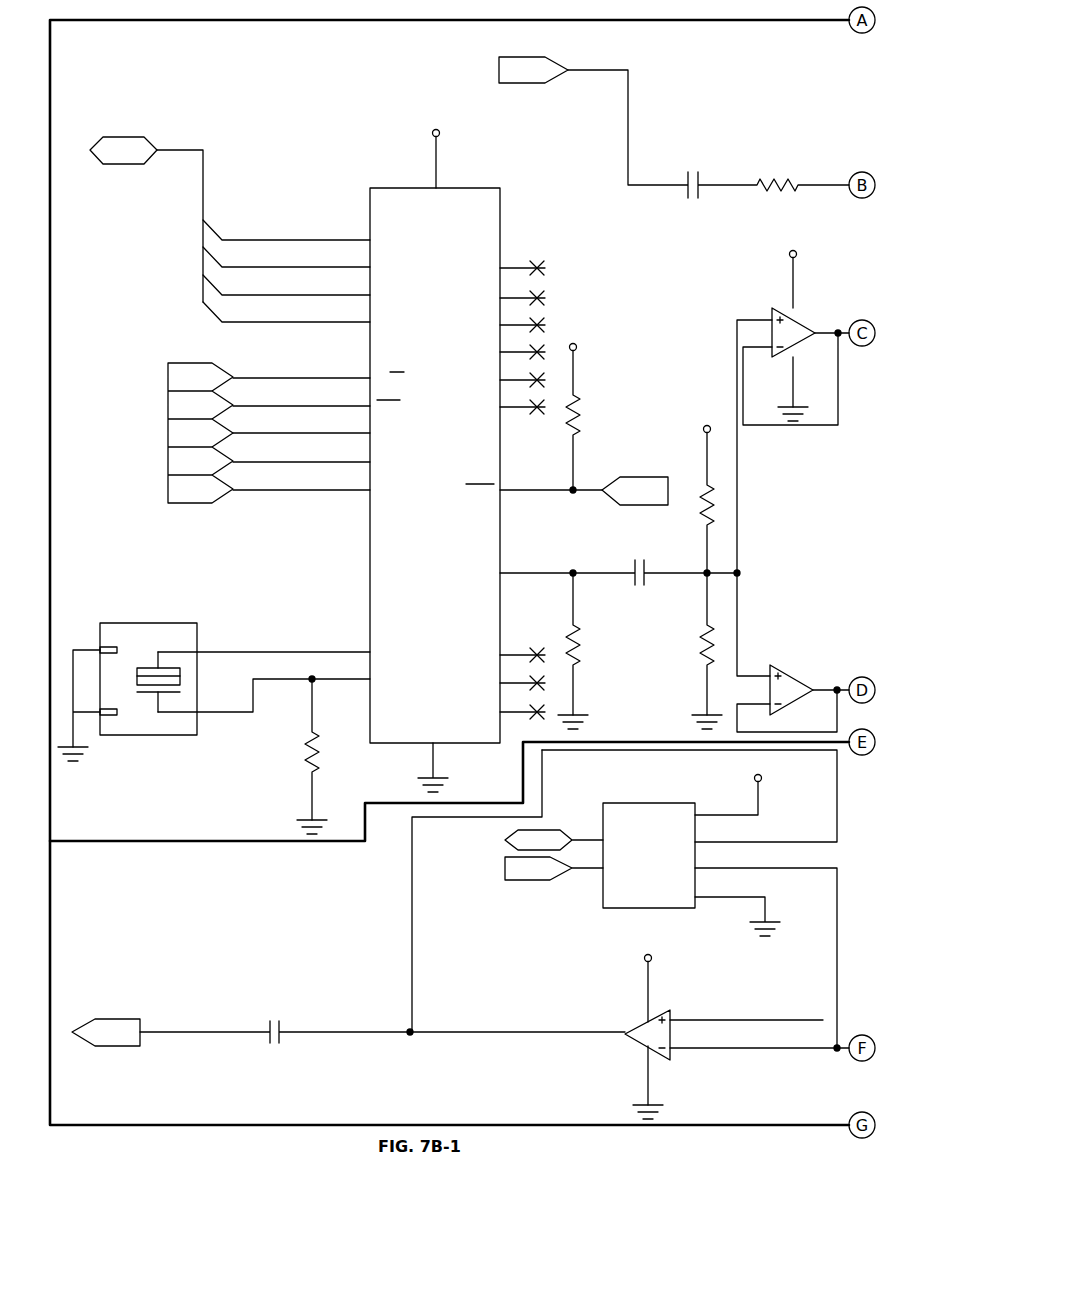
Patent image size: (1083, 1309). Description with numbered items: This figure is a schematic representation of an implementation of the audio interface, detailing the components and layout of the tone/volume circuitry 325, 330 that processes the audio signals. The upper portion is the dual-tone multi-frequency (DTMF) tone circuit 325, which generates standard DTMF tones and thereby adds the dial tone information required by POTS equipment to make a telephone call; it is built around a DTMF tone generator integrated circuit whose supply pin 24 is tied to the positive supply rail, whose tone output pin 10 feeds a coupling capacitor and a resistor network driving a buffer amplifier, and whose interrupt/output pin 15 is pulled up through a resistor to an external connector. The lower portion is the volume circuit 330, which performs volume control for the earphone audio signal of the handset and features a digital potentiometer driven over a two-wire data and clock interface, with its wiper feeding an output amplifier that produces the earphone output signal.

The DTMF tone circuit 325 is at (295, 82).
The volume circuit 330 is at (190, 914).
The VDD supply pin of DTMF generator U16 24 is at (426, 159).
The IAO output pin of DTMF generator U16 15 is at (584, 487).
The TONE output pin of DTMF generator U16 10 is at (620, 569).